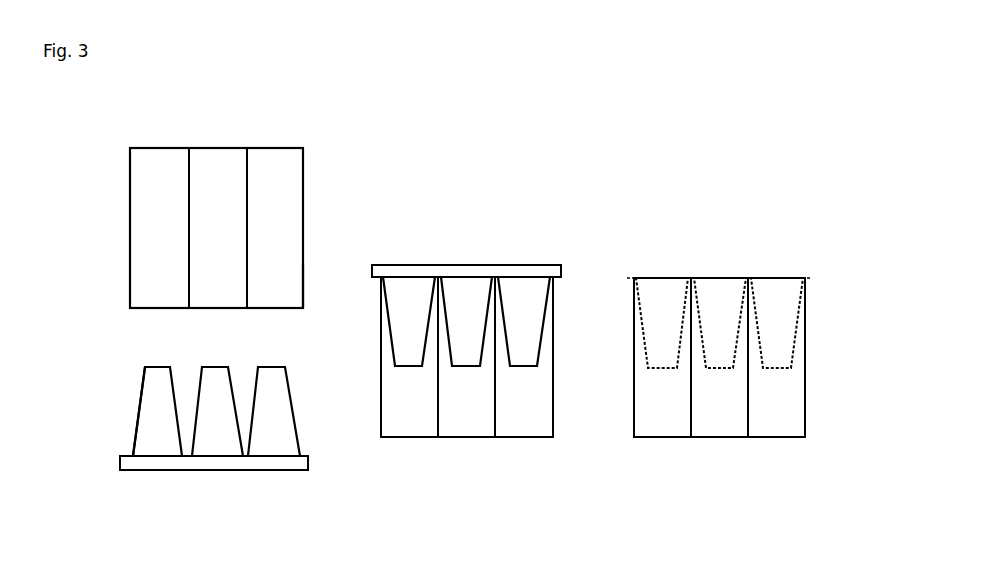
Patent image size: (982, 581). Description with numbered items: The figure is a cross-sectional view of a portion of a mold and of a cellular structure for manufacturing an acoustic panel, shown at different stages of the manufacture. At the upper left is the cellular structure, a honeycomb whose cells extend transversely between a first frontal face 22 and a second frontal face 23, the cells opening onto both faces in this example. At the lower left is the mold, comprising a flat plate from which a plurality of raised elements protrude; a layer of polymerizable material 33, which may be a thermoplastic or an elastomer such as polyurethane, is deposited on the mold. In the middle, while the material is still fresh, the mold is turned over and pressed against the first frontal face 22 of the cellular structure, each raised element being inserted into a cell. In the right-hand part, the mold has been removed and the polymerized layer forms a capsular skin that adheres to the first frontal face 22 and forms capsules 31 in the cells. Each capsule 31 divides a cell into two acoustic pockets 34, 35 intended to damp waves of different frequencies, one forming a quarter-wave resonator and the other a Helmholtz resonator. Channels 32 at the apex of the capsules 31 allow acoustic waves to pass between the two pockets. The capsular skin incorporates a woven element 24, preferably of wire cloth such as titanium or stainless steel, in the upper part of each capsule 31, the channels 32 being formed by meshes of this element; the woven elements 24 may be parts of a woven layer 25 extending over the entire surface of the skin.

The first frontal face 22 is at (276, 148).
The second frontal face 23 is at (277, 314).
The woven element 24 is at (790, 357).
The woven layer 25 is at (800, 302).
The capsule 31 is at (663, 282).
The channel 32 is at (805, 407).
The layer of polymerizable material 33 is at (131, 425).
The acoustic pocket 34 is at (660, 310).
The acoustic pocket 35 is at (653, 422).